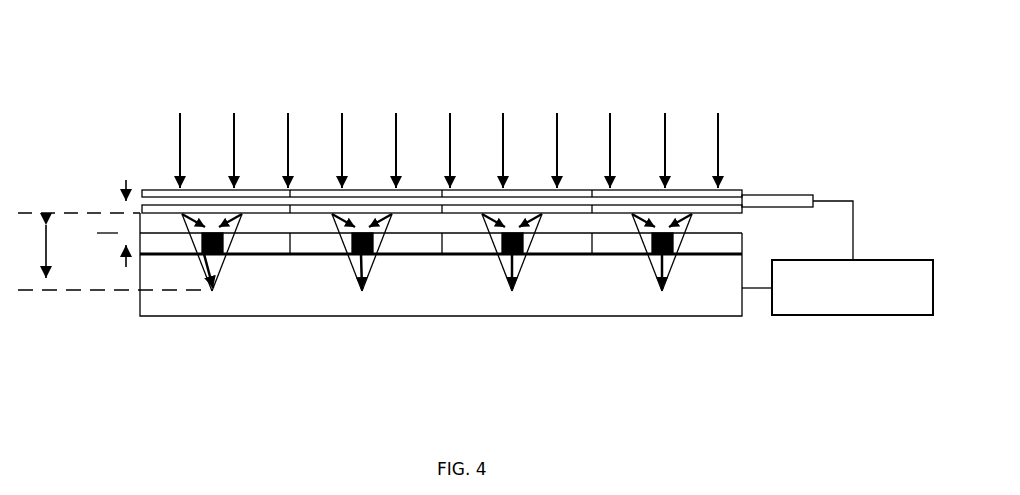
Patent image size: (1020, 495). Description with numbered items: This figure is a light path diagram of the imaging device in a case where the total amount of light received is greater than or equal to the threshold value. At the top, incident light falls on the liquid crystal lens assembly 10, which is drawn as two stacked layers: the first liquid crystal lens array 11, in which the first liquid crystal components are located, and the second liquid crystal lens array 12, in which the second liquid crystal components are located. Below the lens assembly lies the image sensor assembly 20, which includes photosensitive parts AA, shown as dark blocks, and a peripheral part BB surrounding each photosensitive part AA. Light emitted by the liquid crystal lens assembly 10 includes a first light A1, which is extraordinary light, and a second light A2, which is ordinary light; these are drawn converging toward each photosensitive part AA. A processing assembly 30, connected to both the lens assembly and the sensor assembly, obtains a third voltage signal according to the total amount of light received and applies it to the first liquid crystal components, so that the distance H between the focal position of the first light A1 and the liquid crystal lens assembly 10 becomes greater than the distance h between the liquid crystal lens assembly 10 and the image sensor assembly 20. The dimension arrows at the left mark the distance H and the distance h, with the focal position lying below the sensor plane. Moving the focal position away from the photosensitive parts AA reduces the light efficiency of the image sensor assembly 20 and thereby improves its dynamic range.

The liquid crystal lens assembly 10 is at (477, 119).
The first liquid crystal lens array 11 is at (442, 142).
The second liquid crystal lens array 12 is at (682, 75).
The image sensor assembly 20 is at (455, 317).
The processing assembly 30 is at (852, 311).
The first light A1 is at (177, 318).
The second light A2 is at (252, 318).
The photosensitive part AA is at (437, 327).
The peripheral part BB is at (441, 327).
The distance H is at (111, 251).
The distance h is at (111, 223).